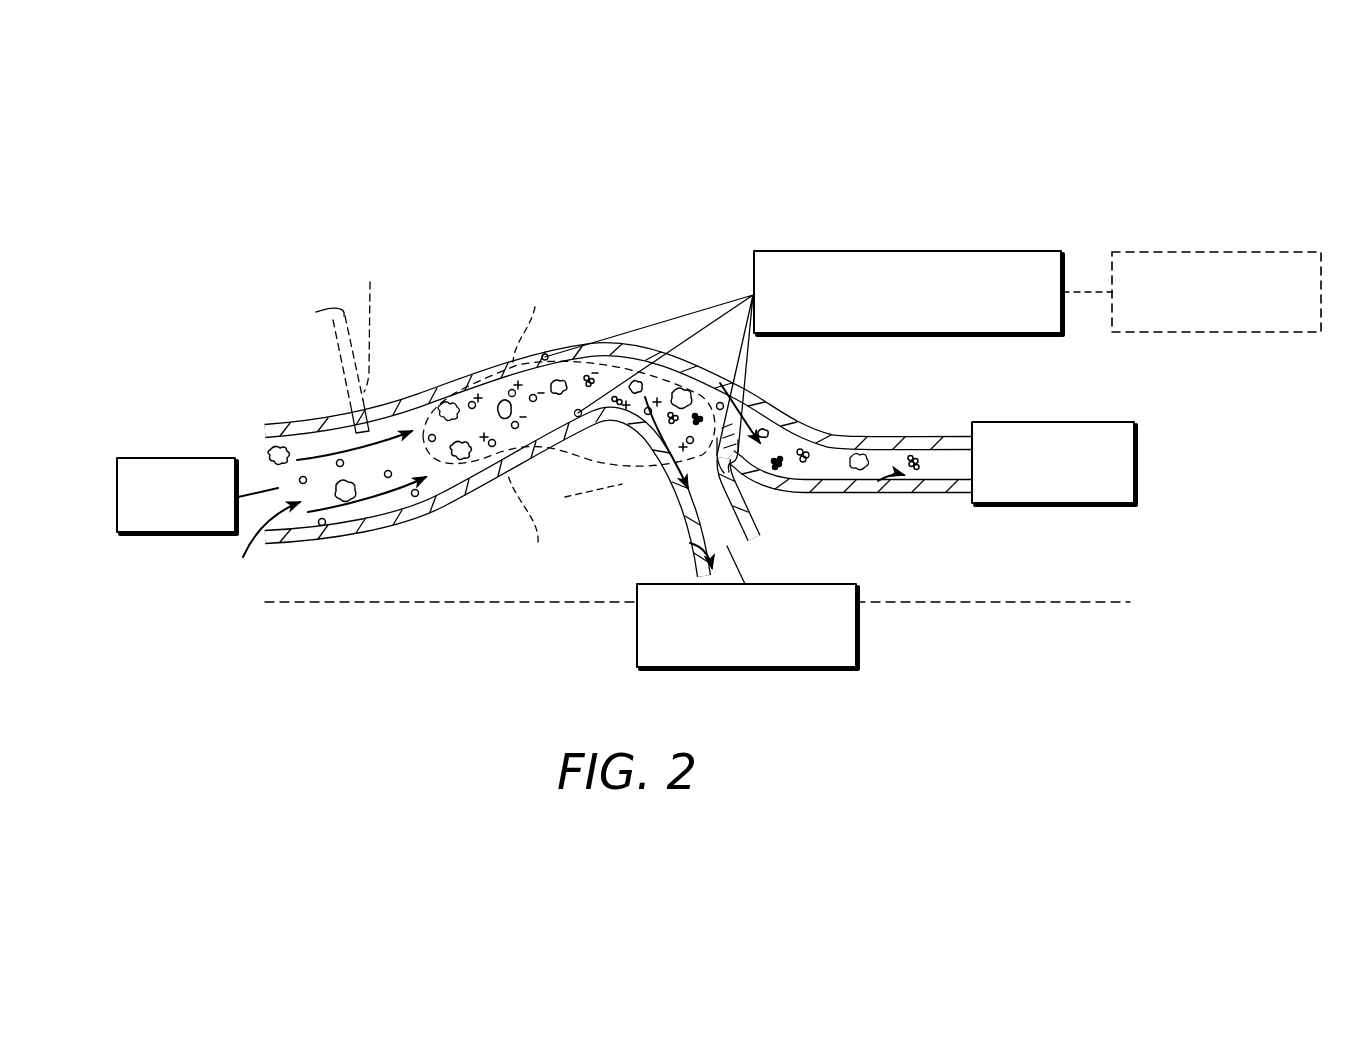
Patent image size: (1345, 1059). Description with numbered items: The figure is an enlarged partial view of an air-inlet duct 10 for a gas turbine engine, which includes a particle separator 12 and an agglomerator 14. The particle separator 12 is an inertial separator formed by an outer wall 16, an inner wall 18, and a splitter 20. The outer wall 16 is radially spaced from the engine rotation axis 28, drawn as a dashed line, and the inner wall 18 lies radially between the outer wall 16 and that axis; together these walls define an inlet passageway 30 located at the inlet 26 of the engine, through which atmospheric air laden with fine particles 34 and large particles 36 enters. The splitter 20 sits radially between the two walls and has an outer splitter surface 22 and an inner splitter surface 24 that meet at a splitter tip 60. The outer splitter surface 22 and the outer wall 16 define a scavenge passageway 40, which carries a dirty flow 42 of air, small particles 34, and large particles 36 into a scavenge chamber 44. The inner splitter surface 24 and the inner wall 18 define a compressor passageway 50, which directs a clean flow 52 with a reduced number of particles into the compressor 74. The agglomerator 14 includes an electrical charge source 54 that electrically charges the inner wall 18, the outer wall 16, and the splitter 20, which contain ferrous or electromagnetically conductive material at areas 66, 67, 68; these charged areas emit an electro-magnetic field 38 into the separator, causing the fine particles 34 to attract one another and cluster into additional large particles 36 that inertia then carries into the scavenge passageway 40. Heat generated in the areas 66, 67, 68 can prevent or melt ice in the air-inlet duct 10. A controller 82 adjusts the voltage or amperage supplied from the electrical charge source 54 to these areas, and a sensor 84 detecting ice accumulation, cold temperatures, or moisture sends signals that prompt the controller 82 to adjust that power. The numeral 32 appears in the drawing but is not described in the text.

The air-inlet duct 10 is at (676, 232).
The particle separator 12 is at (745, 400).
The agglomerator 14 is at (876, 233).
The outer wall 16 is at (327, 423).
The inner wall 18 is at (453, 500).
The splitter 20 is at (735, 472).
The outer splitter surface 22 is at (741, 410).
The inner splitter surface 24 is at (722, 492).
The inlet 26 is at (176, 457).
The engine rotation axis 28 is at (287, 606).
The inlet passageway 30 is at (264, 549).
The inlet duct 32 is at (367, 510).
The fine particles 34 is at (511, 389).
The large particles 36 is at (442, 404).
The electro-magnetic field 38 is at (415, 425).
The scavenge passageway 40 is at (878, 481).
The dirty flow 42 is at (754, 372).
The scavenge chamber 44 is at (1075, 421).
The compressor passageway 50 is at (690, 543).
The clean flow 52 is at (665, 478).
The electrical charge source 54 is at (907, 251).
The splitter tip 60 is at (710, 447).
The area 66 is at (533, 526).
The area 67 is at (533, 319).
The area 68 is at (575, 496).
The compressor 74 is at (858, 625).
The controller 82 is at (1245, 250).
The sensor 84 is at (372, 322).